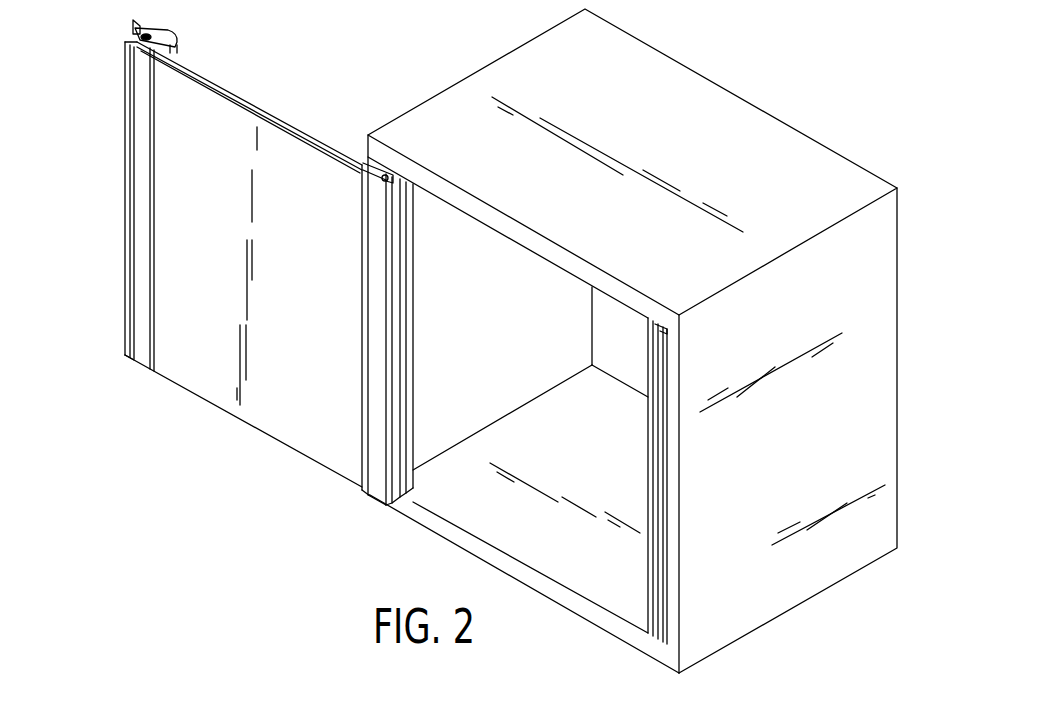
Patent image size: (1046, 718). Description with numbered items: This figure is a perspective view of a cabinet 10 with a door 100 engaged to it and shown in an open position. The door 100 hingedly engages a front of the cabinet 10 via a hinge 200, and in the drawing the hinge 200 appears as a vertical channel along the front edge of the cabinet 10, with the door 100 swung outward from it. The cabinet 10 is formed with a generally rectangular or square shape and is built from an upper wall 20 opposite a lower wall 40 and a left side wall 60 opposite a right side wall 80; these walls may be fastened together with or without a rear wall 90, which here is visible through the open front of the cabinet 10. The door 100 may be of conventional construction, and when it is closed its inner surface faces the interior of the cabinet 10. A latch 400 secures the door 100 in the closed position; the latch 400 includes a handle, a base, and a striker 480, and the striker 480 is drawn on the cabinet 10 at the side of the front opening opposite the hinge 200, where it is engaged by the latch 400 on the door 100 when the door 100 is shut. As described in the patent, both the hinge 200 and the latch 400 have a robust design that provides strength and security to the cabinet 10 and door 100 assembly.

The cabinet 10 is at (765, 125).
The upper wall 20 is at (692, 104).
The lower wall 40 is at (602, 593).
The left side wall 60 is at (352, 138).
The right side wall 80 is at (884, 373).
The rear wall 90 is at (635, 366).
The door 100 is at (208, 380).
The hinge 200 is at (378, 427).
The latch 400 is at (143, 122).
The striker 480 is at (657, 590).